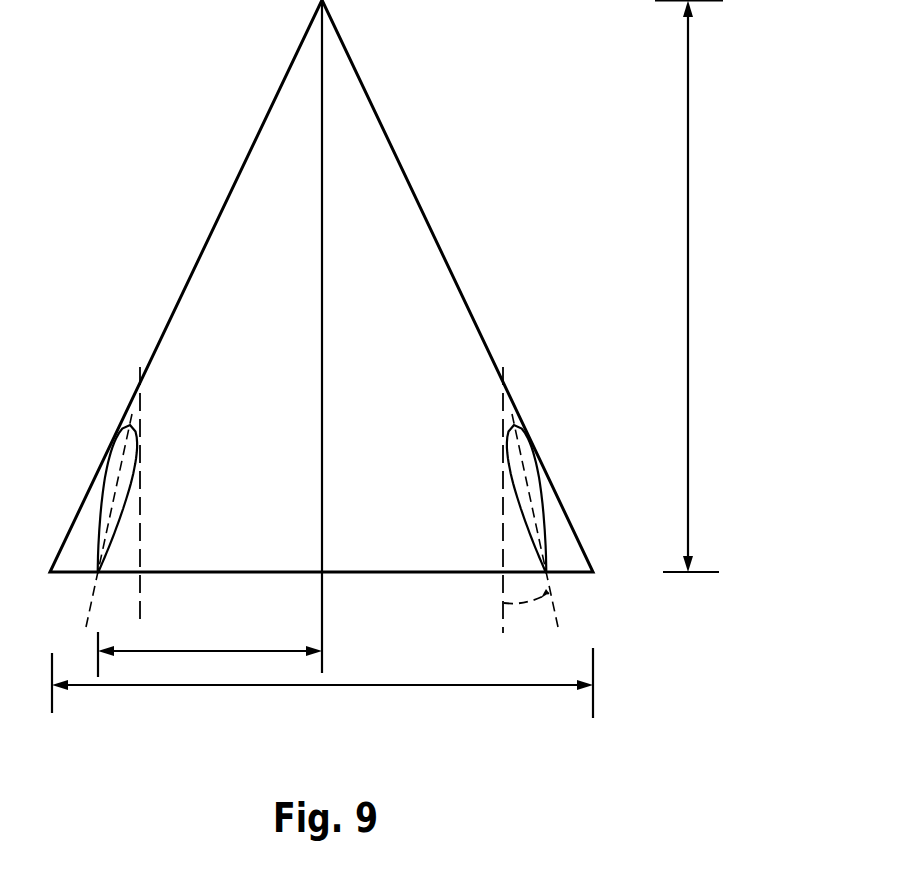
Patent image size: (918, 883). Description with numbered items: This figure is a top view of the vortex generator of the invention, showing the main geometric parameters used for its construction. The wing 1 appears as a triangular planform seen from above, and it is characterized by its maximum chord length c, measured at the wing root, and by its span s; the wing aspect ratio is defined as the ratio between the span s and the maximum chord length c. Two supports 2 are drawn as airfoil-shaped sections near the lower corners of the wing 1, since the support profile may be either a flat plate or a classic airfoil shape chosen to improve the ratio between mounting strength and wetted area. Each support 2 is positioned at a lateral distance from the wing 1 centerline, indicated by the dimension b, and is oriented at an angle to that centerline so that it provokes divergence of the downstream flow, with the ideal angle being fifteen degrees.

The wing 1 is at (213, 277).
The supports 2 is at (100, 508).
The maximum chord length c is at (689, 287).
The support angle with respect to the wing centerline b is at (210, 642).
The span s is at (322, 691).